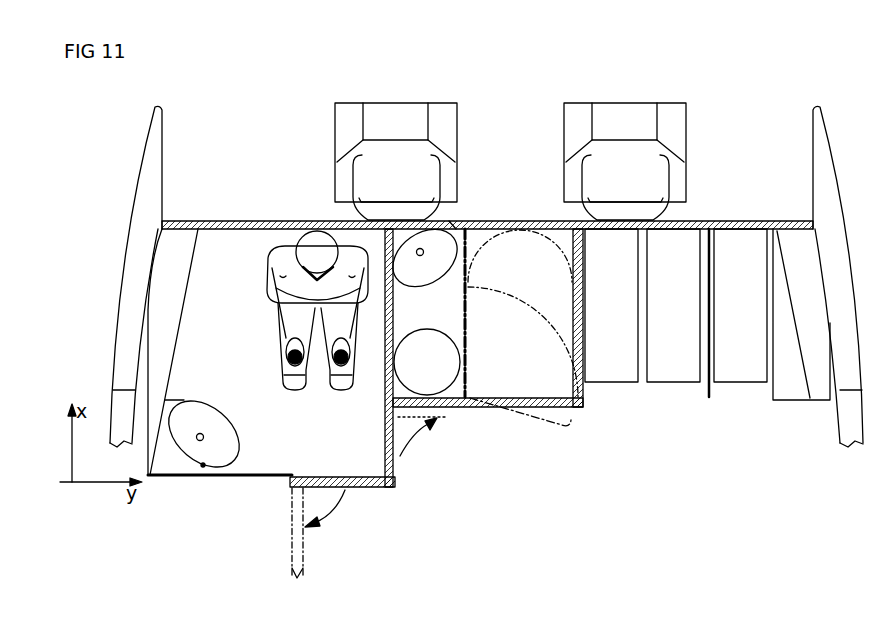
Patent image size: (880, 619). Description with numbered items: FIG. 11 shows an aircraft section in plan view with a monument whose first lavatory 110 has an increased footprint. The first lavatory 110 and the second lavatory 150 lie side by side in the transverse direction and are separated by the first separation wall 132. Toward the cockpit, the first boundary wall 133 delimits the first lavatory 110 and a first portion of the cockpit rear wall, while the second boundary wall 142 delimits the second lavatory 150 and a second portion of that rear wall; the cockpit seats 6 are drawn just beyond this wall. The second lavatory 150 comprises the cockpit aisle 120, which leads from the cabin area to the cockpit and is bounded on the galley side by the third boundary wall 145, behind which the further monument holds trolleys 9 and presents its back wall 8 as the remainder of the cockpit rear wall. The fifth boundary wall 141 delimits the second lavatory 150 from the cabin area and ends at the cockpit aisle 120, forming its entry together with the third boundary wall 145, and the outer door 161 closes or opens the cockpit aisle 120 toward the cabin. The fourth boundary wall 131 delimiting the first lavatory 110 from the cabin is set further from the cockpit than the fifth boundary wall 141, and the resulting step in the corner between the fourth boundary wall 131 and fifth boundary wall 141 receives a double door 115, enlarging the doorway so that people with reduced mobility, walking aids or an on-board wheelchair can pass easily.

The cockpit seat 6 is at (356, 112).
The back wall 8 is at (713, 220).
The trolley 9 is at (622, 385).
The first lavatory 110 is at (270, 398).
The double door 115 is at (397, 472).
The cockpit aisle 120 is at (521, 299).
The fourth boundary wall 131 is at (180, 480).
The first separation wall 132 is at (387, 365).
The first boundary wall 133 is at (243, 220).
The fifth boundary wall 141 is at (457, 408).
The second boundary wall 142 is at (453, 220).
The third boundary wall 145 is at (583, 390).
The second lavatory 150 is at (513, 186).
The outer door 161 is at (522, 420).